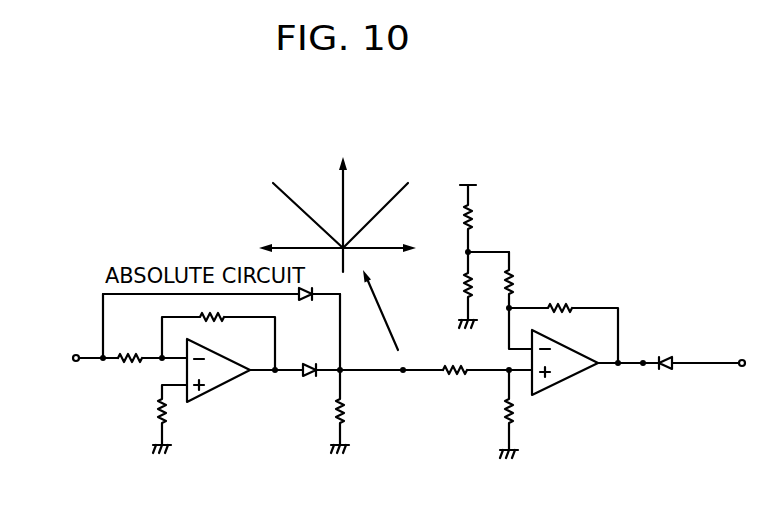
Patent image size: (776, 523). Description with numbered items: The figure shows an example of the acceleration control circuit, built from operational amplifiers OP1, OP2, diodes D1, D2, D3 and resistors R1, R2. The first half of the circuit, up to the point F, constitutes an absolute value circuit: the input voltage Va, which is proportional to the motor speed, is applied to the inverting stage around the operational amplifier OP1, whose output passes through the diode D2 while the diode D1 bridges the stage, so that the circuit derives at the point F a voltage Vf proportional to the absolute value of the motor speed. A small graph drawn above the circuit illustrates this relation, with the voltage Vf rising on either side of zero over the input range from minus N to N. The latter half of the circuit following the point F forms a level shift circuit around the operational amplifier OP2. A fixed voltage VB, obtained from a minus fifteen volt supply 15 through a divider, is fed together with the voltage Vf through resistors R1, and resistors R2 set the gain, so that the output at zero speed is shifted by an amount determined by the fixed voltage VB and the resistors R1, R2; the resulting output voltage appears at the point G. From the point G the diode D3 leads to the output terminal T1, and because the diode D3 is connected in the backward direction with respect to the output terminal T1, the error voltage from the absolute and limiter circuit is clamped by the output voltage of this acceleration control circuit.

The input voltage Va is at (91, 344).
The absolute value voltage Vf is at (340, 203).
The input range axis of transfer characteristic N is at (332, 239).
The diode D1 is at (319, 307).
The diode D2 is at (319, 360).
The diode D3 is at (696, 351).
The operational amplifier OP1 is at (233, 378).
The operational amplifier OP2 is at (575, 377).
The resistor R1 is at (492, 326).
The resistor R2 is at (559, 371).
The point F is at (403, 370).
The point G is at (643, 363).
The output terminal T1 is at (742, 379).
The -15 V supply 15 is at (462, 207).
The fixed voltage VB is at (484, 278).